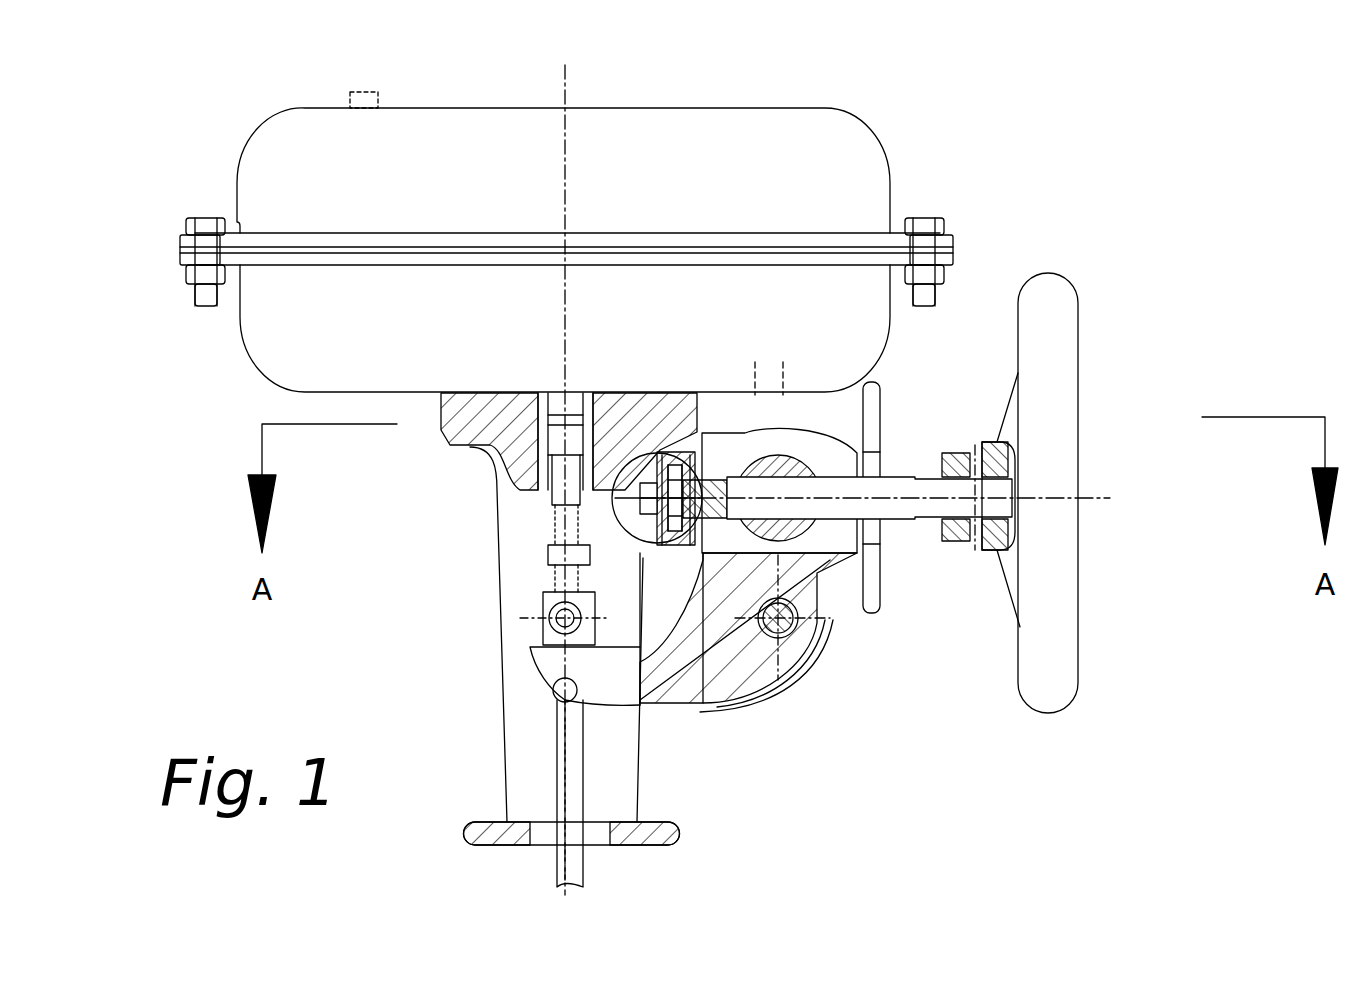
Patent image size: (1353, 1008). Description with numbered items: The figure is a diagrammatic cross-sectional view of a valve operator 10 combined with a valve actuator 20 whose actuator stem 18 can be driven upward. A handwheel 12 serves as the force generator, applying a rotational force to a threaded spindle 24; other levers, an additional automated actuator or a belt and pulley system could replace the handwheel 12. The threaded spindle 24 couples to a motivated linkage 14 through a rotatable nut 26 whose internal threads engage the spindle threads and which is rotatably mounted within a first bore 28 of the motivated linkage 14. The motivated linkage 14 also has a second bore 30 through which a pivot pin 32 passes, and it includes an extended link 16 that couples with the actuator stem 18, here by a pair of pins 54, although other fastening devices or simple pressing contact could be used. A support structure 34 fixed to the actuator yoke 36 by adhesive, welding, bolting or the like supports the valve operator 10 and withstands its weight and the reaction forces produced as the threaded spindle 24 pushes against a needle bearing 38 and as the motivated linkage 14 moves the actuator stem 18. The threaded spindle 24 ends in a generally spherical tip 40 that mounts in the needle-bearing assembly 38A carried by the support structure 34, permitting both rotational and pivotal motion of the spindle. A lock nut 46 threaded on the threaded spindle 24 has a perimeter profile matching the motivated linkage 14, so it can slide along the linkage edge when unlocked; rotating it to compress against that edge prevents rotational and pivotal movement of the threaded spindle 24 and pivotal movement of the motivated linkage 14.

The valve operator 10 is at (930, 692).
The handwheel 12 is at (1058, 300).
The motivated linkage 14 is at (668, 700).
The extended link 16 is at (545, 655).
The actuator stem 18 is at (540, 510).
The actuator 20 is at (262, 400).
The threaded spindle 24 is at (890, 520).
The rotatable nut 26 is at (780, 470).
The first bore 28 is at (820, 462).
The second bore 30 is at (800, 630).
The pivot pin 32 is at (780, 650).
The support structure 34 is at (740, 685).
The actuator yoke 36 is at (500, 552).
The needle bearing 38 is at (650, 560).
The needle-bearing assembly 38A is at (680, 566).
The spherical tip 40 is at (668, 560).
The lock nut 46 is at (870, 432).
The pins 54 is at (540, 600).